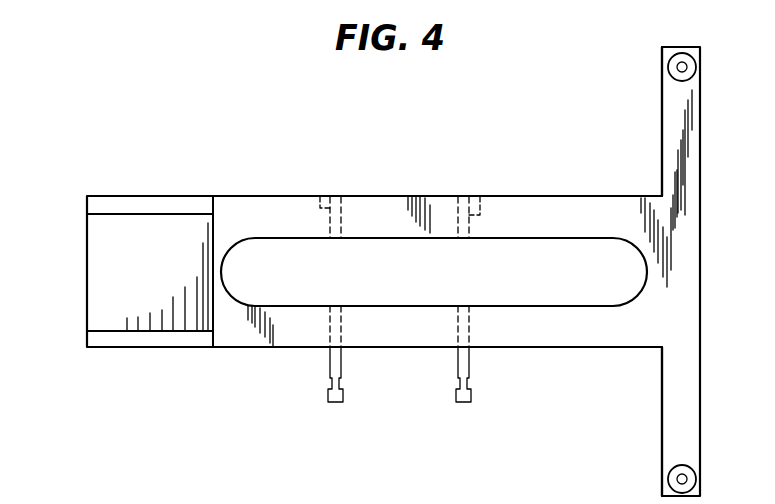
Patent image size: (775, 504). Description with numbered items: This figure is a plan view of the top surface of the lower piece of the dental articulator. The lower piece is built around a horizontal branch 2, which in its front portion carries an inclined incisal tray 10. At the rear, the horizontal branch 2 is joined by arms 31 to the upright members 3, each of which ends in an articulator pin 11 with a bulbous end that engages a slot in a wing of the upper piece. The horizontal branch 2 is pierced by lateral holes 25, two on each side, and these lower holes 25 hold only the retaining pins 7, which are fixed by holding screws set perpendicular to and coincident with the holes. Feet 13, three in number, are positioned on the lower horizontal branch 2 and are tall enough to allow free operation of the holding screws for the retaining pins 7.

The horizontal branch 2 is at (413, 197).
The upright member 3 is at (692, 268).
The retaining pin 7 is at (457, 385).
The incisal tray 10 is at (87, 318).
The articulator pin 11 is at (697, 62).
The foot 13 is at (335, 197).
The lateral hole 25 is at (319, 196).
The arm 31 is at (690, 140).